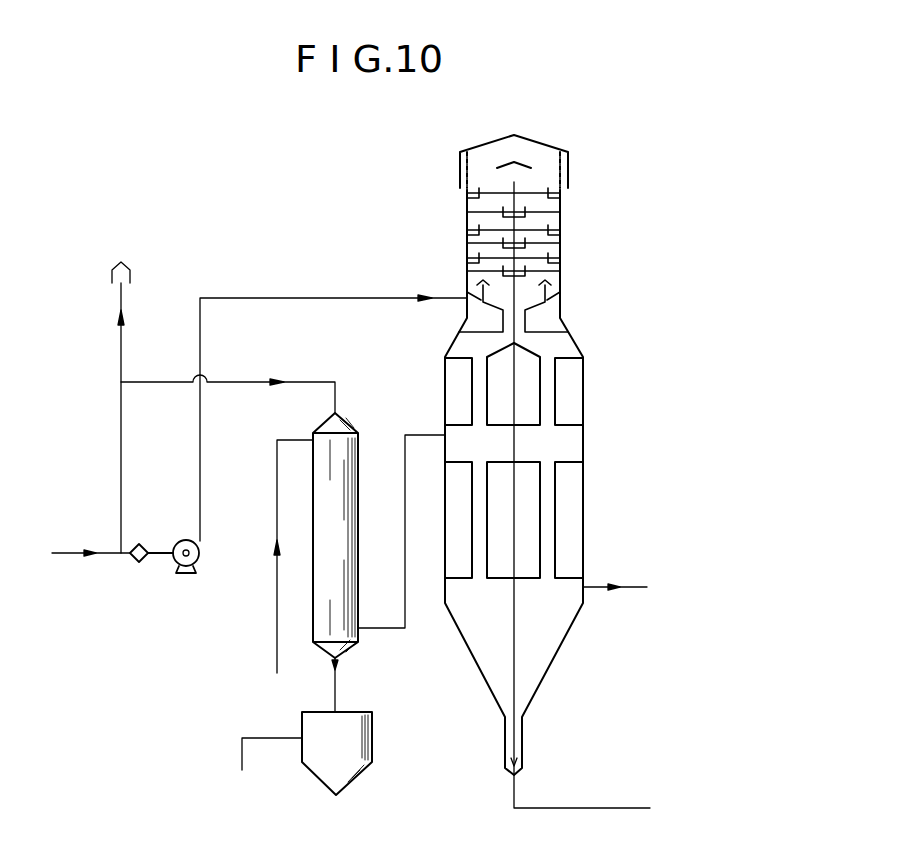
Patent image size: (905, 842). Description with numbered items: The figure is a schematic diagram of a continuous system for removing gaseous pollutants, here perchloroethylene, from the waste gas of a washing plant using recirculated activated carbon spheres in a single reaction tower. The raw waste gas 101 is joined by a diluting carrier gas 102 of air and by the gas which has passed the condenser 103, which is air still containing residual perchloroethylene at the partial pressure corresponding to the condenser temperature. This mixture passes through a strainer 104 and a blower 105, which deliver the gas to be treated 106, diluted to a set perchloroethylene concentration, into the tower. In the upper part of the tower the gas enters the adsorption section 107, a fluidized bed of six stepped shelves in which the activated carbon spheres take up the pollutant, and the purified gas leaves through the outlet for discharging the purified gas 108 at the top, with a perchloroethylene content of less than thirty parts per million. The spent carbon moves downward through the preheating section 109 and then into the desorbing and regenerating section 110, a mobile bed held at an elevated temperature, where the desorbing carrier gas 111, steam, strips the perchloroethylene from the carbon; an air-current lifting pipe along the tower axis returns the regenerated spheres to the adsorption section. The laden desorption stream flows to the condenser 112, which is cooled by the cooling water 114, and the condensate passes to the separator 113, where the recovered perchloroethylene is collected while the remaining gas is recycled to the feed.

The raw waste gas 101 is at (62, 555).
The diluting carrier gas 102 is at (121, 357).
The gas which has passed the condenser 103 is at (238, 383).
The strainer 104 is at (139, 563).
The blower 105 is at (199, 553).
The gas to be treated 106 is at (340, 298).
The adsorption section 107 is at (583, 192).
The outlet for discharging the purified gas 108 is at (568, 170).
The preheating section 109 is at (597, 345).
The desorbing and regenerating section 110 is at (597, 462).
The desorbing carrier gas 111 is at (628, 588).
The condenser 112 is at (345, 553).
The separator 113 is at (355, 735).
The cooling water 114 is at (277, 618).